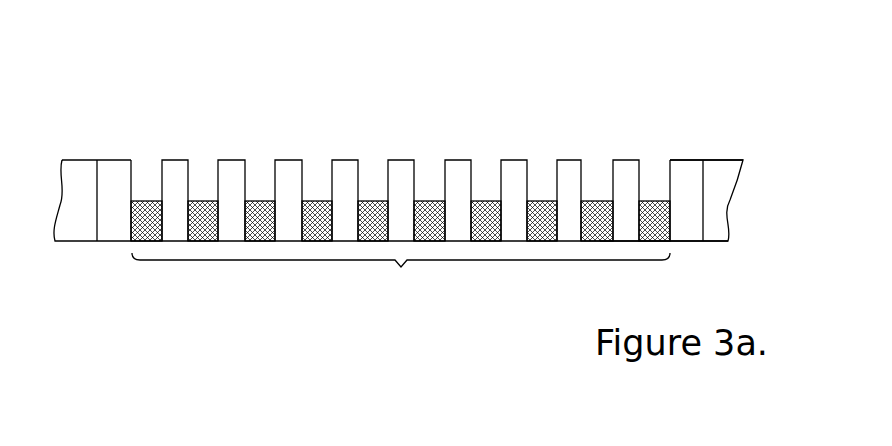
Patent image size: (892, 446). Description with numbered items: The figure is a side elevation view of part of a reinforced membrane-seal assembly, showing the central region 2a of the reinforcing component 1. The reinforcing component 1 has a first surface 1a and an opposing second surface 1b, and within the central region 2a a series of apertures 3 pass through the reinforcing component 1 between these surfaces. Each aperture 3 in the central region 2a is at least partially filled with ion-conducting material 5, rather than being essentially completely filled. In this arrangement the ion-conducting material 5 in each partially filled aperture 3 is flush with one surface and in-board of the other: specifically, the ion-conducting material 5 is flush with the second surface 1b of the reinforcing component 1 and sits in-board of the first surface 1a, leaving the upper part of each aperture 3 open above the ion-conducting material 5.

The reinforcing component 1 is at (675, 200).
The first surface 1a is at (677, 160).
The second surface 1b is at (678, 242).
The central region 2a is at (401, 281).
The aperture 3 is at (492, 167).
The ion-conducting material 5 is at (320, 228).